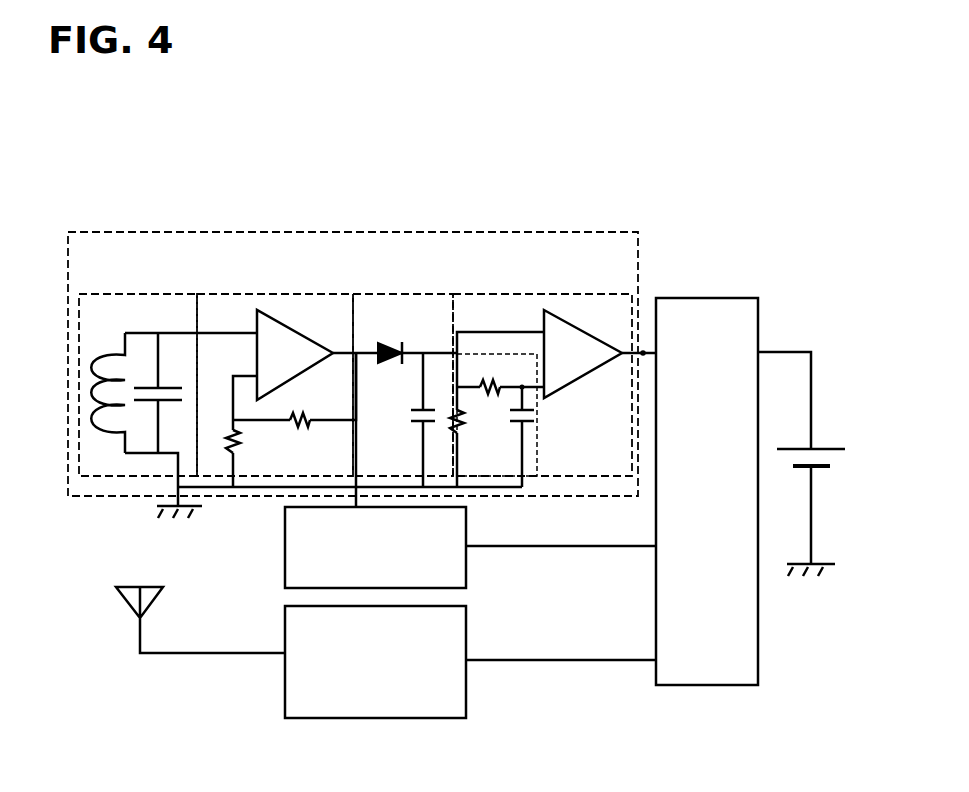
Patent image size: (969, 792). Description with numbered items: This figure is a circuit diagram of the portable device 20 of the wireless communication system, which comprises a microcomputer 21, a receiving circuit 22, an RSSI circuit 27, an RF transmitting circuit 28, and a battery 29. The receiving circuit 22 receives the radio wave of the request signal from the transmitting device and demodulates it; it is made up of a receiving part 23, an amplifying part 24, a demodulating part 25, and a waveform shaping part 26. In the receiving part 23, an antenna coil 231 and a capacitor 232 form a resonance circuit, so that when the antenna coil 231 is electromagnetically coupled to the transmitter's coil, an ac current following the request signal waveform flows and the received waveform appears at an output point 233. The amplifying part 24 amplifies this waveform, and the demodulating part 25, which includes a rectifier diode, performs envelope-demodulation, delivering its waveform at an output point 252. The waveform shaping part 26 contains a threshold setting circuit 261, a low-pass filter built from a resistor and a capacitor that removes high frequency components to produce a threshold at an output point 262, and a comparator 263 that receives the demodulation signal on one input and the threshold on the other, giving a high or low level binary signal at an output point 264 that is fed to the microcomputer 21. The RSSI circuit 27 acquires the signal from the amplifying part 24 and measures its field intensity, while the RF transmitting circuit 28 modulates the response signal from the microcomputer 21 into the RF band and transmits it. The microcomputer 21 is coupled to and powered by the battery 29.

The portable device 20 is at (123, 212).
The microcomputer 21 is at (722, 298).
The receiving circuit 22 is at (463, 232).
The receiving part 23 is at (160, 294).
The antenna coil 231 is at (108, 356).
The capacitor 232 is at (168, 386).
The output point 233 is at (200, 333).
The amplifying part 24 is at (312, 294).
The demodulating part 25 is at (430, 294).
The output point 252 is at (419, 352).
The waveform shaping part 26 is at (585, 294).
The threshold setting circuit 261 is at (537, 440).
The output point 262 is at (524, 389).
The comparator 263 is at (582, 332).
The output point 264 is at (643, 352).
The RSSI circuit 27 is at (466, 572).
The RF transmitting circuit 28 is at (466, 690).
The battery 29 is at (820, 449).